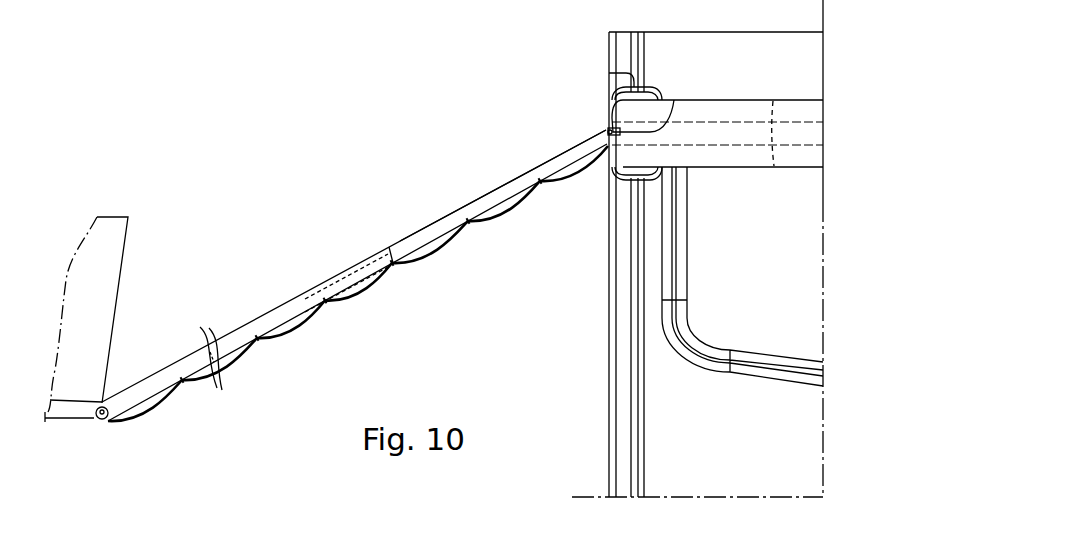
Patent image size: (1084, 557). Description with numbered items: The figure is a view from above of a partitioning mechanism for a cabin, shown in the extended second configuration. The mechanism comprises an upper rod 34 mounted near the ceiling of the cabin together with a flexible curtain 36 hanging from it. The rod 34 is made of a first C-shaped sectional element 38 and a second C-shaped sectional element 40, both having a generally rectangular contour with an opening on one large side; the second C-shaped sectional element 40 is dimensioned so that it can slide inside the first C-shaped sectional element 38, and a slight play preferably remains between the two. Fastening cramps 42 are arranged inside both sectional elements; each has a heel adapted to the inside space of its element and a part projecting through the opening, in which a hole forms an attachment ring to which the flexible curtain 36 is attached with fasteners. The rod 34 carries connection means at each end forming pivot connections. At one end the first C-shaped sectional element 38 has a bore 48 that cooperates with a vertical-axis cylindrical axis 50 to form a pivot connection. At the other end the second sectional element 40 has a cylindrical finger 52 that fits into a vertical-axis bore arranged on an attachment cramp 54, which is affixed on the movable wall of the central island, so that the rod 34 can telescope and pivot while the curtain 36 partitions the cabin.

The upper rod 34 is at (329, 263).
The flexible curtain 36 is at (311, 318).
The first C-shaped sectional element 38 is at (240, 327).
The second C-shaped sectional element 40 is at (485, 195).
The fastening cramps 42 is at (182, 382).
The bore 48 is at (102, 401).
The vertical-axis cylindrical axis 50 is at (98, 420).
The cylindrical finger 52 is at (605, 130).
The attachment cramp 54 is at (674, 100).